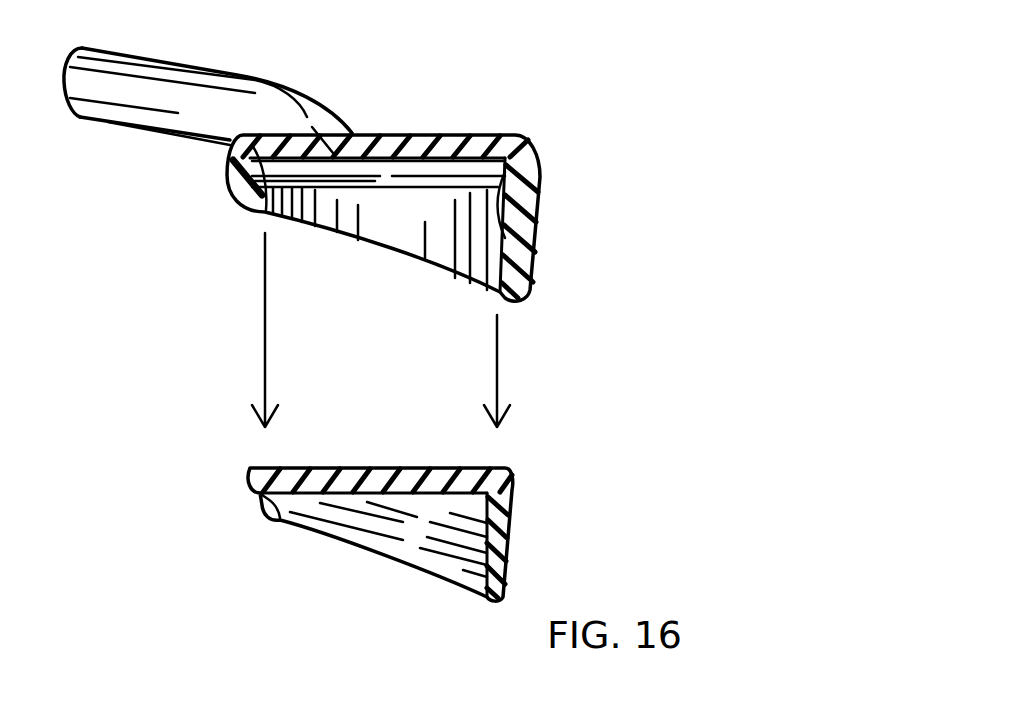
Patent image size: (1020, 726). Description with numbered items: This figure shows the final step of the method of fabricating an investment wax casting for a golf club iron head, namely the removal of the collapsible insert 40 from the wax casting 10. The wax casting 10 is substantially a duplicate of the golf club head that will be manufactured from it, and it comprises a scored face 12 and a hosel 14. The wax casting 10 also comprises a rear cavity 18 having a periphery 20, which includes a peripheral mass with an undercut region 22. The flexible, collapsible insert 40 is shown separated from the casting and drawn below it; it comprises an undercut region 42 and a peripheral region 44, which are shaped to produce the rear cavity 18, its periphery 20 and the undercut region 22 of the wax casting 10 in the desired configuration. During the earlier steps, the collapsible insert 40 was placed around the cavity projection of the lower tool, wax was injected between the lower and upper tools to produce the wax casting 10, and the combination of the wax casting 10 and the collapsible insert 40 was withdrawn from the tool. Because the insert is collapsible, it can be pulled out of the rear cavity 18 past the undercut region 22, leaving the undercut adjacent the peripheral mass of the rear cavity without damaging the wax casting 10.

The wax casting 10 is at (452, 86).
The scored face 12 is at (403, 134).
The hosel 14 is at (113, 95).
The rear cavity 18 is at (384, 162).
The periphery 20 is at (228, 177).
The undercut region 22 is at (545, 228).
The collapsible insert 40 is at (508, 568).
The undercut region 42 is at (250, 480).
The peripheral region 44 is at (277, 520).